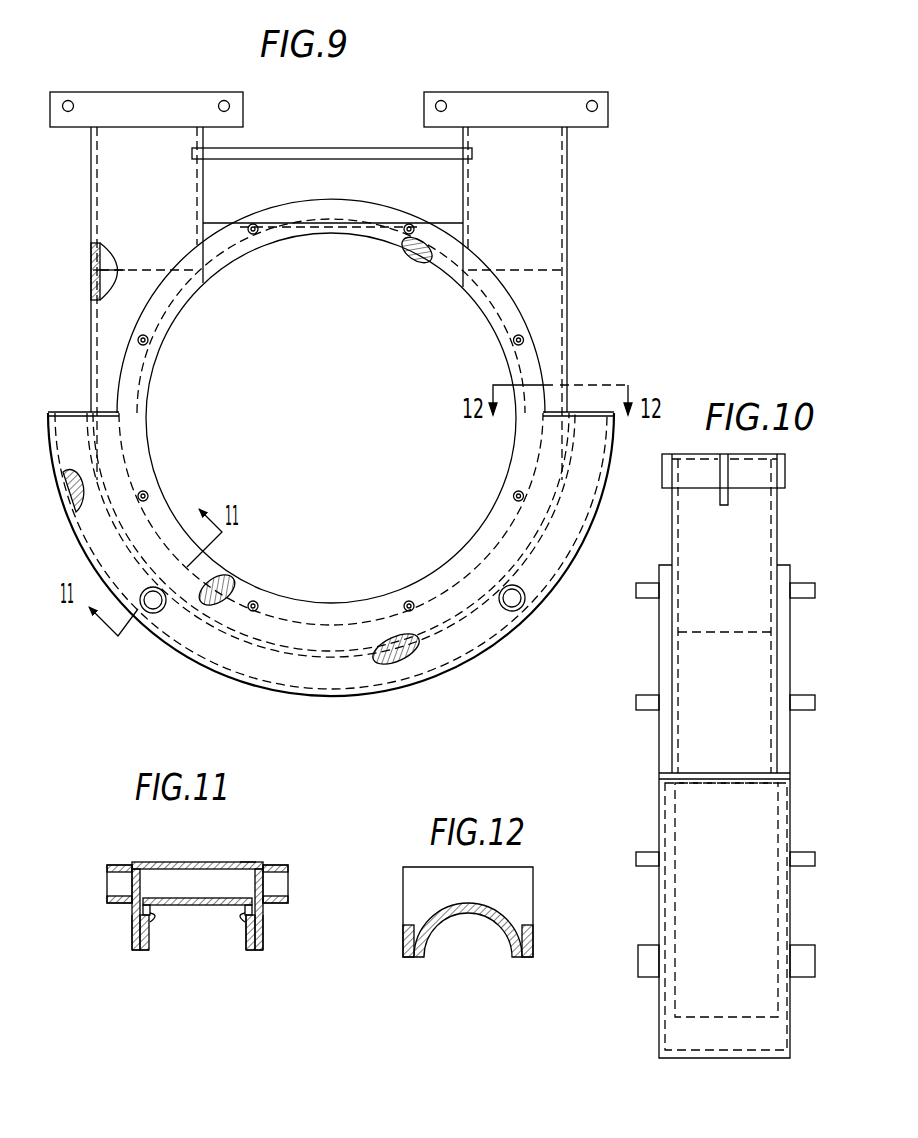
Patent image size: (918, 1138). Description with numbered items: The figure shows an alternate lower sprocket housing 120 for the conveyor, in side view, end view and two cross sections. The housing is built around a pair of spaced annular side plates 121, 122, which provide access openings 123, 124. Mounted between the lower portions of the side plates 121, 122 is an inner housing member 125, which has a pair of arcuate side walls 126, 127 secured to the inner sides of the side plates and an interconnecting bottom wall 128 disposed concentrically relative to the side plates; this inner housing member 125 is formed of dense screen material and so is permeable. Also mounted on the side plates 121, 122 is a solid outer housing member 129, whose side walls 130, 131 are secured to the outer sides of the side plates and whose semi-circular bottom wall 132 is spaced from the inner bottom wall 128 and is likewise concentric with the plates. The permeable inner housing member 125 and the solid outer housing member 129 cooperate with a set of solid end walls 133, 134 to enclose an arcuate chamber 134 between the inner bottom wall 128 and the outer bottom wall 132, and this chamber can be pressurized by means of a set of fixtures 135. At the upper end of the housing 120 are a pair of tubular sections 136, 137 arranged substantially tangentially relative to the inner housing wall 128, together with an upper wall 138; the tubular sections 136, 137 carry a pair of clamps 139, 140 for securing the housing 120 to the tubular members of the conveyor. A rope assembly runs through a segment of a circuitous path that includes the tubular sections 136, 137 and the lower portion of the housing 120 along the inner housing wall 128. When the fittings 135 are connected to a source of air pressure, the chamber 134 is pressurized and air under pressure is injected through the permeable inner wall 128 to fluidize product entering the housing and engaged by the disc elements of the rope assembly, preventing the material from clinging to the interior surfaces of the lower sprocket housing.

In FIG. 9, the lower sprocket housing 120 is at (606, 207).
In FIG. 10, the annular side plate 121 is at (657, 655).
In FIG. 11, the annular side plate 121 is at (137, 935).
In FIG. 12, the annular side plate 121 is at (530, 940).
In FIG. 10, the annular side plate 122 is at (790, 673).
In FIG. 11, the annular side plate 122 is at (262, 930).
In FIG. 12, the annular side plate 122 is at (405, 935).
In FIG. 9, the access opening 123 is at (505, 442).
In FIG. 11, the access opening 123 is at (258, 950).
In FIG. 11, the access opening 124 is at (140, 950).
In FIG. 11, the inner housing member 125 is at (241, 936).
In FIG. 11, the arcuate side wall 126 is at (150, 917).
In FIG. 11, the arcuate side wall 127 is at (246, 917).
In FIG. 9, the bottom wall 128 is at (303, 660).
In FIG. 11, the bottom wall 128 is at (200, 905).
In FIG. 11, the outer housing member 129 is at (251, 860).
In FIG. 11, the side wall 130 is at (132, 927).
In FIG. 11, the side wall 131 is at (263, 940).
In FIG. 9, the semi-circular bottom wall 132 is at (380, 698).
In FIG. 10, the semi-circular bottom wall 132 is at (768, 923).
In FIG. 11, the semi-circular bottom wall 132 is at (215, 862).
In FIG. 9, the solid end wall 133 is at (63, 412).
In FIG. 9, the arcuate chamber 134 is at (612, 412).
In FIG. 10, the arcuate chamber 134 is at (757, 773).
In FIG. 11, the arcuate chamber 134 is at (177, 882).
In FIG. 12, the arcuate chamber 134 is at (524, 897).
In FIG. 9, the fixture 135 is at (528, 598).
In FIG. 10, the fixture 135 is at (648, 978).
In FIG. 11, the fixture 135 is at (108, 868).
In FIG. 9, the tubular section 136 is at (91, 256).
In FIG. 9, the tubular section 137 is at (567, 258).
In FIG. 9, the upper wall 138 is at (422, 240).
In FIG. 9, the clamp 139 is at (243, 106).
In FIG. 9, the clamp 140 is at (608, 106).